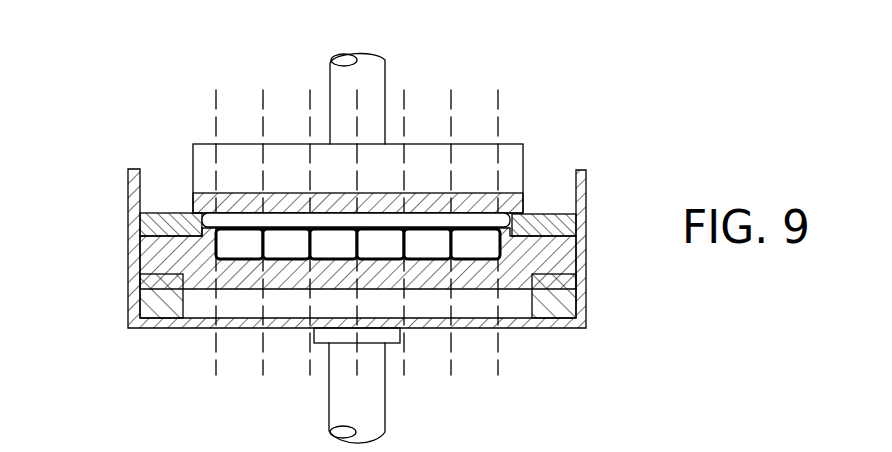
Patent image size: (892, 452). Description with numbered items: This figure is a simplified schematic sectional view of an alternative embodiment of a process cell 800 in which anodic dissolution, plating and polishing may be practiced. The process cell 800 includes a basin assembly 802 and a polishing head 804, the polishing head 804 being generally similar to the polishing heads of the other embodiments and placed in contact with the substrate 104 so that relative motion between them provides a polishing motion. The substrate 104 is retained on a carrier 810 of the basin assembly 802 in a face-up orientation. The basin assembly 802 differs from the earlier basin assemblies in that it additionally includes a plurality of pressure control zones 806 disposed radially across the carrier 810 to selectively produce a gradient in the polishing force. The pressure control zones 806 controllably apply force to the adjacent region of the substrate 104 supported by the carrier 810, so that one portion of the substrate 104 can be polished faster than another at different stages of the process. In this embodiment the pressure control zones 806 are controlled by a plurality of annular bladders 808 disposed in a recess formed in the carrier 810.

The process cell 800 is at (91, 171).
The basin assembly 802 is at (586, 303).
The polishing head 804 is at (455, 71).
The pressure control zones 806 is at (216, 95).
The annular bladders 808 is at (453, 247).
The carrier 810 is at (219, 283).
The substrate 104 is at (246, 220).